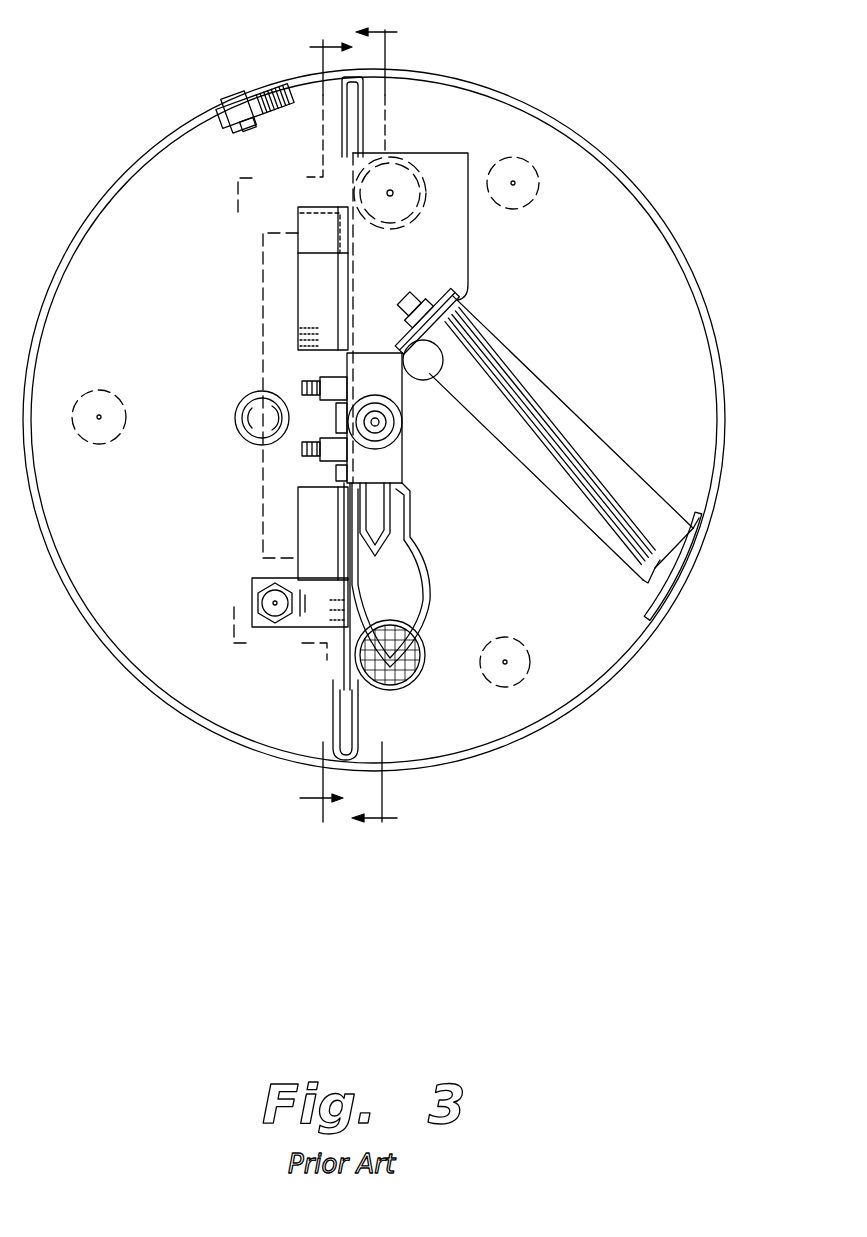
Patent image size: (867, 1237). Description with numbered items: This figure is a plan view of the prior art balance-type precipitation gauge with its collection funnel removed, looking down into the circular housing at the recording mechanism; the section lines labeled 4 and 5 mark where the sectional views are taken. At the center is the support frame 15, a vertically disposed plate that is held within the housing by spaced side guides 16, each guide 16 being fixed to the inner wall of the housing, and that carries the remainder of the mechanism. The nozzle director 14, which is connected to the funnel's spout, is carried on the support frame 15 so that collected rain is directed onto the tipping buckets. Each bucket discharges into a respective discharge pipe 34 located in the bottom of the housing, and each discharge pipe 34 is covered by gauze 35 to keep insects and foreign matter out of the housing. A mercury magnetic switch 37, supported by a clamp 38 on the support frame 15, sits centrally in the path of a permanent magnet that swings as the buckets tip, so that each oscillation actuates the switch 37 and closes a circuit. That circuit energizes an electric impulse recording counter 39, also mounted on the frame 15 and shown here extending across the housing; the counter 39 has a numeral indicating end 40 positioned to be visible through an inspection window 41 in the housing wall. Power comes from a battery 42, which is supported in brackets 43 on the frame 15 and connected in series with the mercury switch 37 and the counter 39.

The section line 4- 4 is at (377, 425).
The section line 5- 5 is at (325, 431).
The nozzle director 14 is at (400, 440).
The support frame 15 is at (342, 370).
The side guides 16 is at (362, 114).
The discharge pipe 34 is at (425, 215).
The gauze 35 is at (410, 662).
The mercury magnetic switch 37 is at (255, 418).
The clamp 38 is at (292, 463).
The electric impulse recording counter 39 is at (562, 445).
The numeral indicating end 40 is at (657, 572).
The inspection window 41 is at (697, 577).
The battery 42 is at (262, 280).
The brackets 43 is at (307, 227).